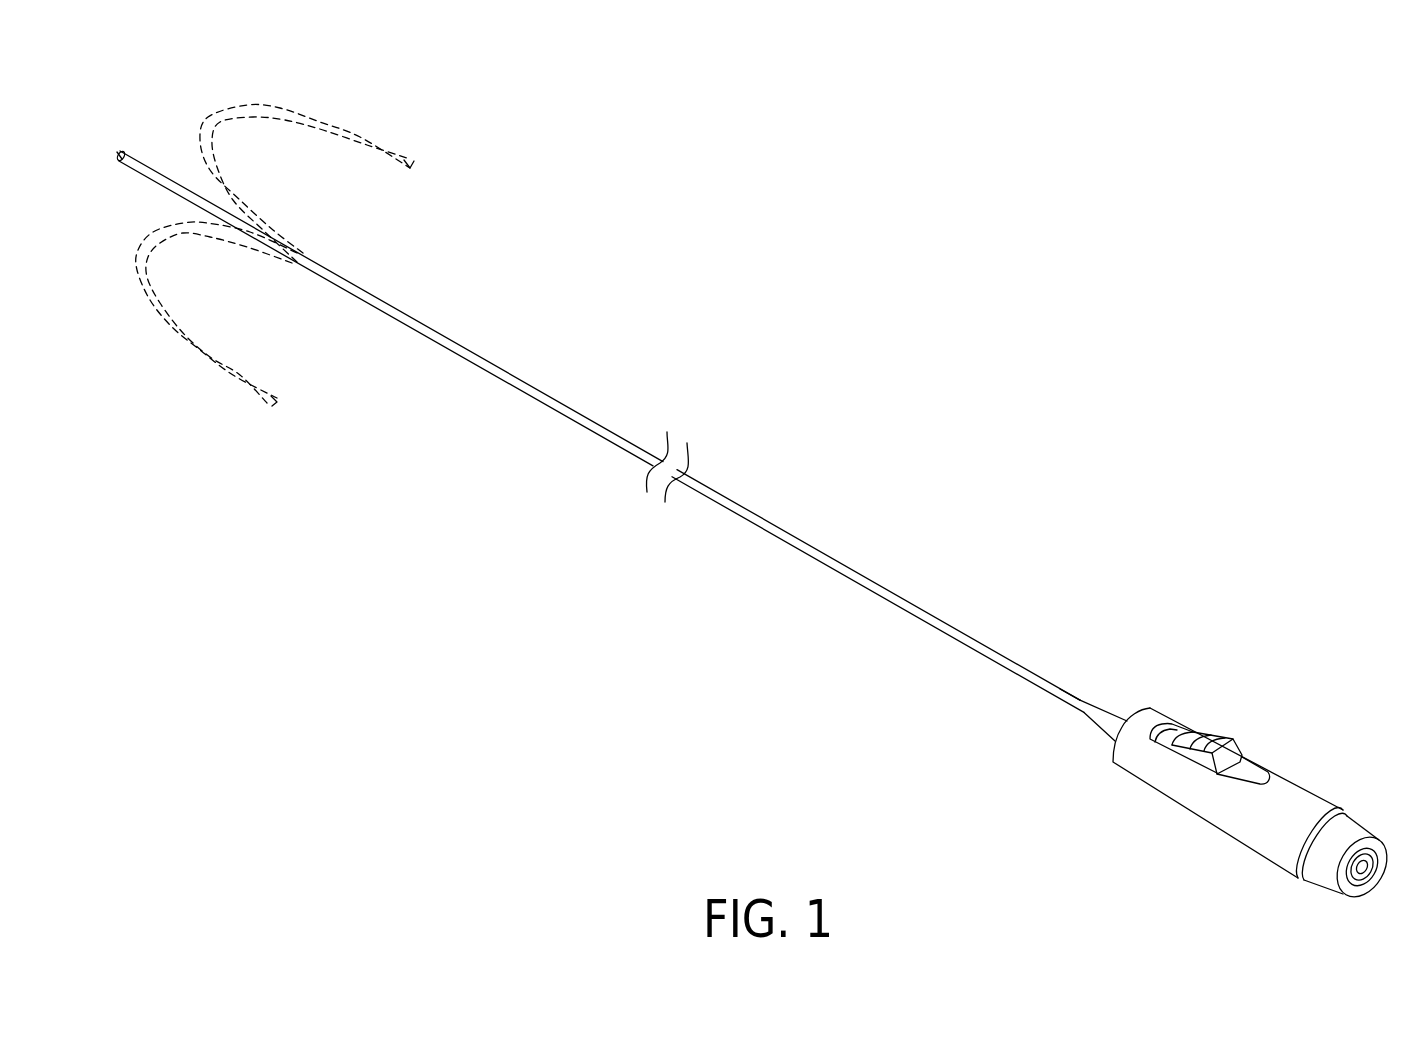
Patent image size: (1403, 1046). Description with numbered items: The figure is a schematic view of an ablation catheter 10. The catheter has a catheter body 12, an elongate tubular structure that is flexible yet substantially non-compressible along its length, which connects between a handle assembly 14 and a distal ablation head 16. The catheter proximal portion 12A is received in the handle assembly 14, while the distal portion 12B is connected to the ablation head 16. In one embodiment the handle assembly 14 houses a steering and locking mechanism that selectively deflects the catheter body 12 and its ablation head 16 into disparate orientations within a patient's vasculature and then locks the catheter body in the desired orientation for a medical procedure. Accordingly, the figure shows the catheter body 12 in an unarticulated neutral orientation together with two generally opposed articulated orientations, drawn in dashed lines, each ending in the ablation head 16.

The ablation catheter 10 is at (1086, 356).
The catheter body 12 is at (803, 546).
The catheter proximal portion 12A is at (1080, 700).
The distal portion 12B is at (323, 124).
The handle assembly 14 is at (1308, 800).
The distal ablation head 16 is at (124, 151).